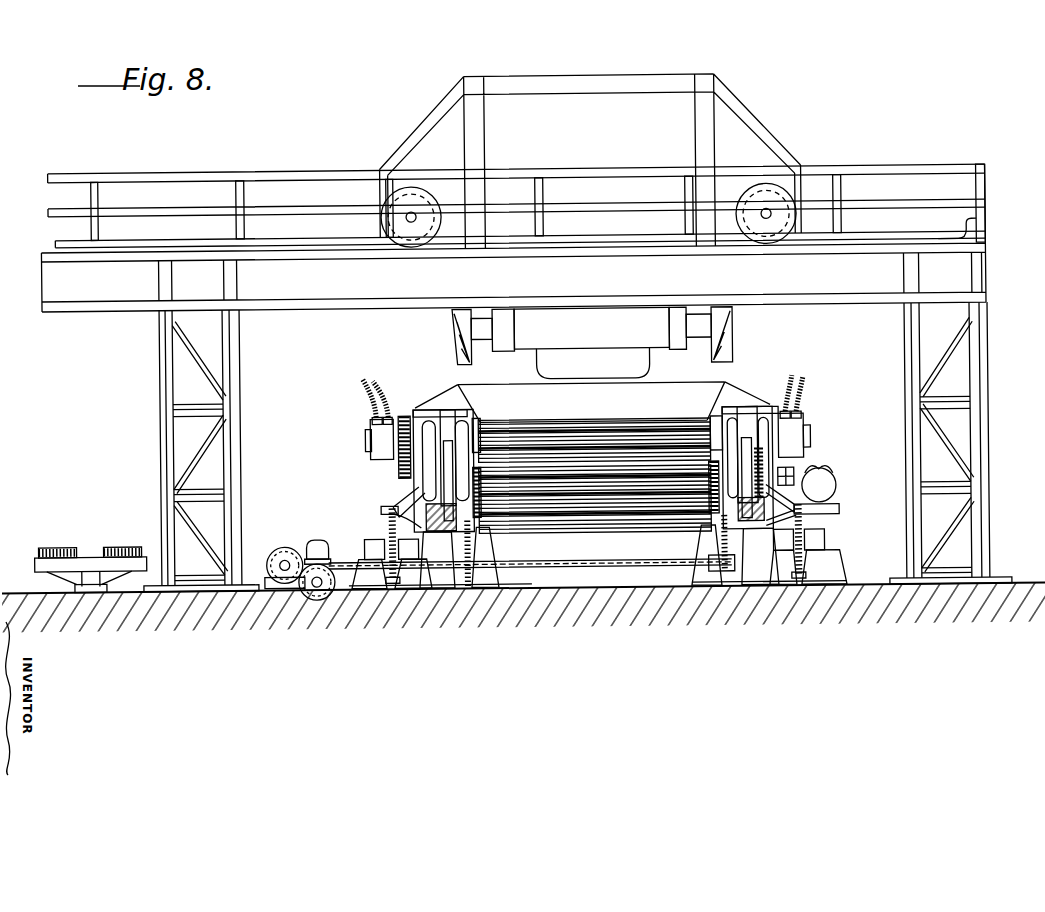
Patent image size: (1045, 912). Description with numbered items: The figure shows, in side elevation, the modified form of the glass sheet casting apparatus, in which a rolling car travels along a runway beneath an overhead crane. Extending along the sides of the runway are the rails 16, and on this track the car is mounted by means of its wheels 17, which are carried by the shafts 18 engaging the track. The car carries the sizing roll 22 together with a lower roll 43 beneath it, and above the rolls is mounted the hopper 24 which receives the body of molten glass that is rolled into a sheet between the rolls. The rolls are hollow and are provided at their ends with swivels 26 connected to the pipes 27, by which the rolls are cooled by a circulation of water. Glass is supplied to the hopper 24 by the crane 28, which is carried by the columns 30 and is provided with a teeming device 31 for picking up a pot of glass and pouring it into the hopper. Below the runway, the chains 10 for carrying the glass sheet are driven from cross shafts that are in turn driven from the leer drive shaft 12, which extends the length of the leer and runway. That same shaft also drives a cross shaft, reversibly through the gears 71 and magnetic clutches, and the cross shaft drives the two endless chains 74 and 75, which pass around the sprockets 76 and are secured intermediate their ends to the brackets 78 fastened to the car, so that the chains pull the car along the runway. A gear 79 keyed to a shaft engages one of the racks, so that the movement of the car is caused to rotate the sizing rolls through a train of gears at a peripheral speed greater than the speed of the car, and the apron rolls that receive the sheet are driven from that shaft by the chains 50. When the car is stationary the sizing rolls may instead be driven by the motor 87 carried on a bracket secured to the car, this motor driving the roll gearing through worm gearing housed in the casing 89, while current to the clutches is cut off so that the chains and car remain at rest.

The chains 10 is at (463, 587).
The leer drive shaft 12 is at (273, 560).
The rails 16 is at (443, 533).
The wheels 17 is at (453, 450).
The shafts 18 is at (427, 535).
The sizing roll 22 is at (630, 433).
The hopper 24 is at (500, 386).
The swivels 26 is at (388, 435).
The pipes 27 is at (367, 377).
The crane 28 is at (710, 114).
The columns 30 is at (173, 371).
The teeming device 31 is at (592, 343).
The lower roll 43 is at (630, 503).
The chains 50 is at (483, 500).
The gears 71 is at (284, 547).
The endless chain 74 is at (383, 512).
The endless chain 75 is at (807, 509).
The sprockets 76 is at (385, 530).
The brackets 78 is at (402, 497).
The gear 79 is at (440, 450).
The motor 87 is at (830, 494).
The casing 89 is at (827, 472).